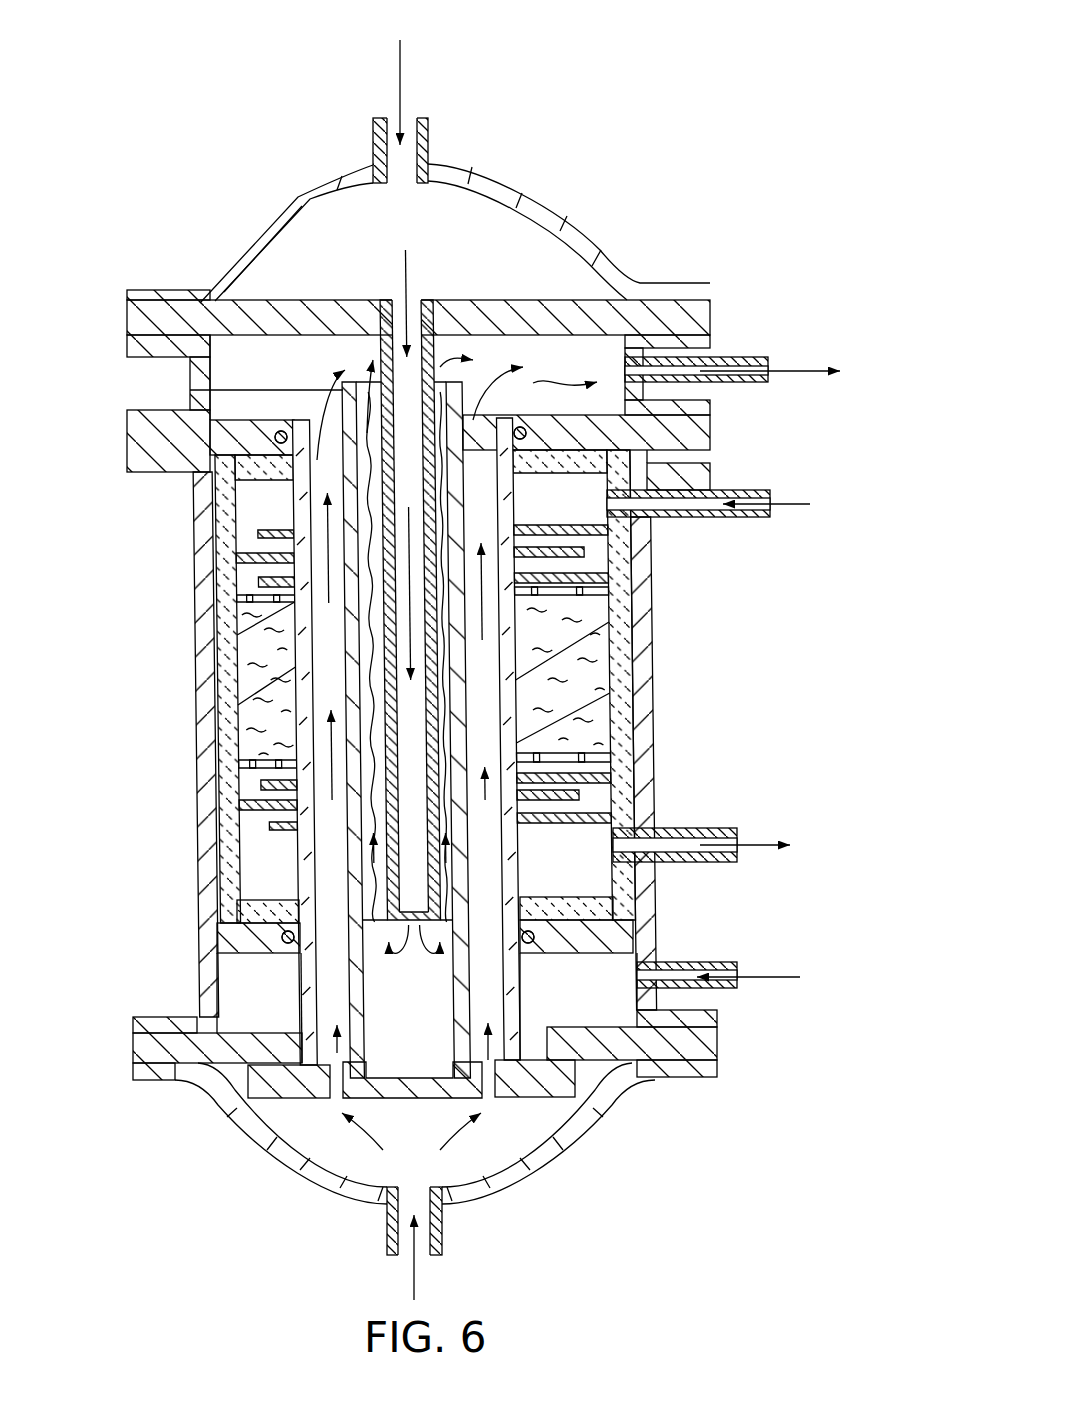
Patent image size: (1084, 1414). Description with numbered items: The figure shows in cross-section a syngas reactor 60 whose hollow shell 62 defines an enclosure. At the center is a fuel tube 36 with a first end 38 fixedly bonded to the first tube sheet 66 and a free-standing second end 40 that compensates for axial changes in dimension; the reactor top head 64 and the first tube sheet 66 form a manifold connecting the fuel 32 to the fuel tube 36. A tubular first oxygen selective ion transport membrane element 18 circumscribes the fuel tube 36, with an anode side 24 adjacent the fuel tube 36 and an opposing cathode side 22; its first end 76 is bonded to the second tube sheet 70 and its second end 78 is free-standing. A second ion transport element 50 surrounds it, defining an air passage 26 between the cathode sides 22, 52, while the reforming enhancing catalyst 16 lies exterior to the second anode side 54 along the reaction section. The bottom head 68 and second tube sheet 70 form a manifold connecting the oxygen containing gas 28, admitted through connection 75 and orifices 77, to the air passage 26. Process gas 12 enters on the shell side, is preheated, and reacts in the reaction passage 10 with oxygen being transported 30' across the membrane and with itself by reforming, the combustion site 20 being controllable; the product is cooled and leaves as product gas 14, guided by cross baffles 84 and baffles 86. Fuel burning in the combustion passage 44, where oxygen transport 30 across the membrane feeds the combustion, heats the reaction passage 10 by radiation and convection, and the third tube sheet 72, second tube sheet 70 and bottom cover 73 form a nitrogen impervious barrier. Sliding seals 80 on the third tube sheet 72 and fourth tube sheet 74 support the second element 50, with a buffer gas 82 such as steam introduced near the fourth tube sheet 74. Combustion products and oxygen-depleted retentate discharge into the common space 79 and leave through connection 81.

The reactor 60 is at (236, 190).
The fuel 32 is at (402, 70).
The reactor top head 64 is at (508, 183).
The common space 79 is at (240, 335).
The first tube sheet 66 is at (688, 313).
The connection 81 is at (735, 357).
The third tube sheet 72 is at (698, 442).
The second end 78 is at (312, 390).
The fuel tube 36 is at (383, 347).
The hollow shell 62 is at (200, 625).
The reforming enhancing catalyst 16 is at (590, 670).
The first oxygen selective ion transport membrane element 18 is at (345, 672).
The combustion site 20 is at (447, 613).
The cross baffles 84 is at (590, 537).
The reaction passage 10 is at (540, 652).
The air passage 26 is at (540, 727).
The baffles 86 is at (580, 830).
The second anode side 54 is at (320, 837).
The cathode side 52 is at (318, 840).
The second ion transport element 50 is at (303, 868).
The cathode side 22 is at (350, 965).
The anode side 24 is at (365, 992).
The fourth tube sheet 74 is at (617, 932).
The sliding seals 80 is at (550, 963).
The buffer gas 82 is at (775, 988).
The product gas 14 is at (745, 847).
The process gas 12 is at (793, 504).
The second tube sheet 70 is at (693, 1047).
The bottom cover 73 is at (262, 1085).
The first end 38 is at (430, 300).
The second end 40 is at (387, 913).
The combustion passage 44 is at (368, 583).
The gas flow path 30 is at (313, 583).
The oxygen being transported 30' is at (314, 753).
The first end 76 is at (343, 1070).
The orifices 77 is at (490, 1095).
The reactor bottom head 68 is at (587, 1113).
The connection 75 is at (442, 1225).
The oxygen containing gas 28 is at (414, 1280).